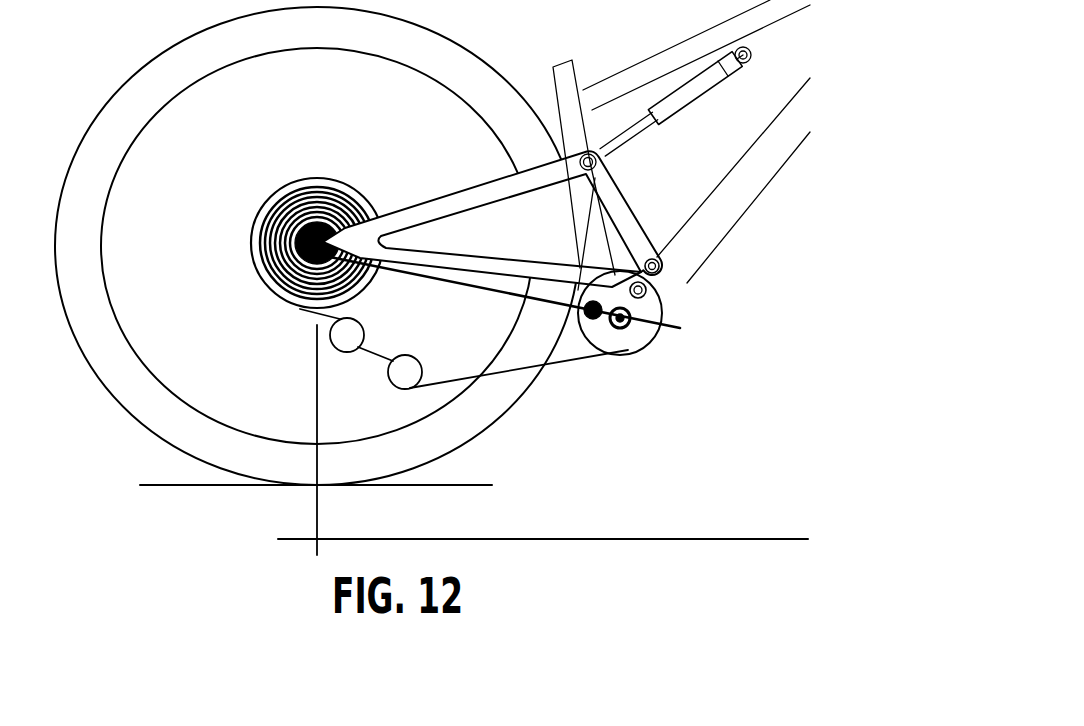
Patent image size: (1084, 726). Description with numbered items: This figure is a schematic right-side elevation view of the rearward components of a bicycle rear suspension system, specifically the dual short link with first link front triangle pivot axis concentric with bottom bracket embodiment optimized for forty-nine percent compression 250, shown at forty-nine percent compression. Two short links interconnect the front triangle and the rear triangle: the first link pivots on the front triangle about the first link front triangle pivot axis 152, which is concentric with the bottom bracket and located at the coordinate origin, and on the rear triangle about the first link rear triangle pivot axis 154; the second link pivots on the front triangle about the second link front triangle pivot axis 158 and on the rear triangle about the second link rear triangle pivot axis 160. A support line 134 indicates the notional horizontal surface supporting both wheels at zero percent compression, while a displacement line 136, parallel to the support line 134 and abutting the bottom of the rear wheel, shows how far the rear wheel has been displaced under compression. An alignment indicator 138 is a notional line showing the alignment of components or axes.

The dual short link with first link front triangle pivot axis concentric with bottom 250 is at (518, 66).
The second link rear triangle pivot axis 160 is at (660, 265).
The first link rear triangle pivot axis 154 is at (650, 302).
The first link front triangle pivot axis 152 is at (632, 353).
The second link front triangle pivot axis 158 is at (627, 343).
The alignment indicator 138 is at (503, 293).
The displacement line 136 is at (478, 485).
The support line 134 is at (683, 539).